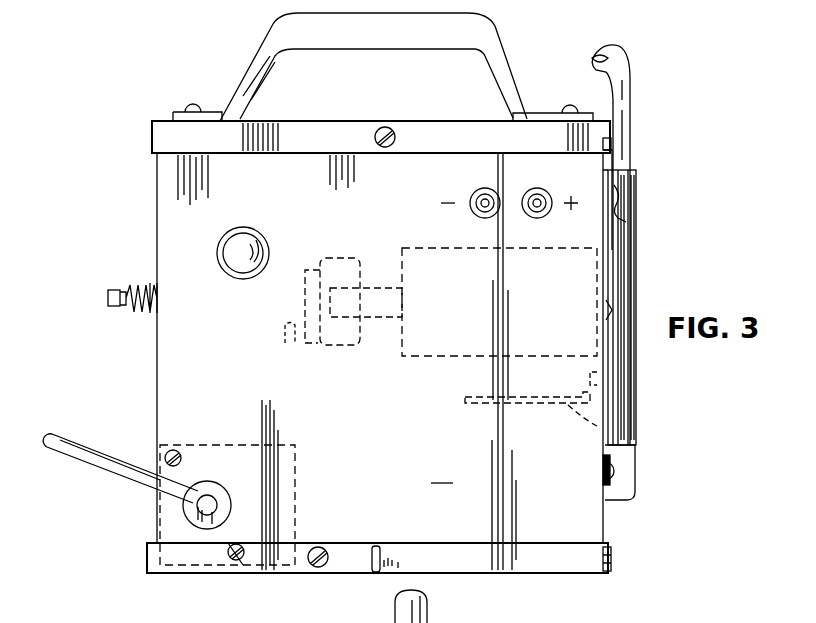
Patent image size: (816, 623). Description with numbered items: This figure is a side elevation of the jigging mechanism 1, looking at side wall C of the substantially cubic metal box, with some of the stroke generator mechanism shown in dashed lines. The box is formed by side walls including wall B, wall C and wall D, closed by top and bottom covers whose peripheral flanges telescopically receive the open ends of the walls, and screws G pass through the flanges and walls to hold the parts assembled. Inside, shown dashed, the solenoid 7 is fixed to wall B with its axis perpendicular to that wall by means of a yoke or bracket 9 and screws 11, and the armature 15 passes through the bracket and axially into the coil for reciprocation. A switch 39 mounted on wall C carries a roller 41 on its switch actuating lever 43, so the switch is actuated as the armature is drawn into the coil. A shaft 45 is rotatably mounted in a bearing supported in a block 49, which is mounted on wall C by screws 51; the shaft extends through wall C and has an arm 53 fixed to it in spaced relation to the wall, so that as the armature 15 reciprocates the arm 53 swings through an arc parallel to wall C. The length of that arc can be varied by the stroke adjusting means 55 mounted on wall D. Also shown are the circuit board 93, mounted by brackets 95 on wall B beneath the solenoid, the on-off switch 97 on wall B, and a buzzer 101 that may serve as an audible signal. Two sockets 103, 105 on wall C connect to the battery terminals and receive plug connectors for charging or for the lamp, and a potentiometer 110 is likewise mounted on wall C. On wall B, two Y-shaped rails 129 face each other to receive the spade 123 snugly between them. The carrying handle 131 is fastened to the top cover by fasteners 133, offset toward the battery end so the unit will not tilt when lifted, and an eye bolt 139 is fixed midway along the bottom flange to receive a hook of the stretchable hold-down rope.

The jigging mechanism 1 is at (155, 172).
The solenoid 7 is at (400, 320).
The yoke or bracket 9 is at (452, 332).
The screws 11 is at (612, 310).
The armature 15 is at (378, 298).
The switch 39 is at (335, 260).
The roller 41 is at (282, 335).
The switch actuating lever 43 is at (303, 297).
The shaft 45 is at (207, 508).
The block 49 is at (160, 518).
The screws 51 is at (168, 455).
The arm 53 is at (90, 470).
The stroke adjusting means 55 is at (112, 299).
The circuit board 93 is at (600, 427).
The brackets 95 is at (600, 381).
The on-off switch 97 is at (626, 220).
The buzzer 101 is at (636, 495).
The socket 103 is at (530, 185).
The socket 105 is at (472, 187).
The potentiometer 110 is at (232, 252).
The spade 123 is at (630, 110).
The Y-shaped rails 129 is at (632, 370).
The carrying handle 131 is at (280, 38).
The fasteners 133 is at (193, 108).
The eye bolts 139 is at (375, 574).
The screws G is at (388, 132).
The side wall B is at (607, 533).
The side wall C is at (442, 468).
The side wall D is at (157, 365).